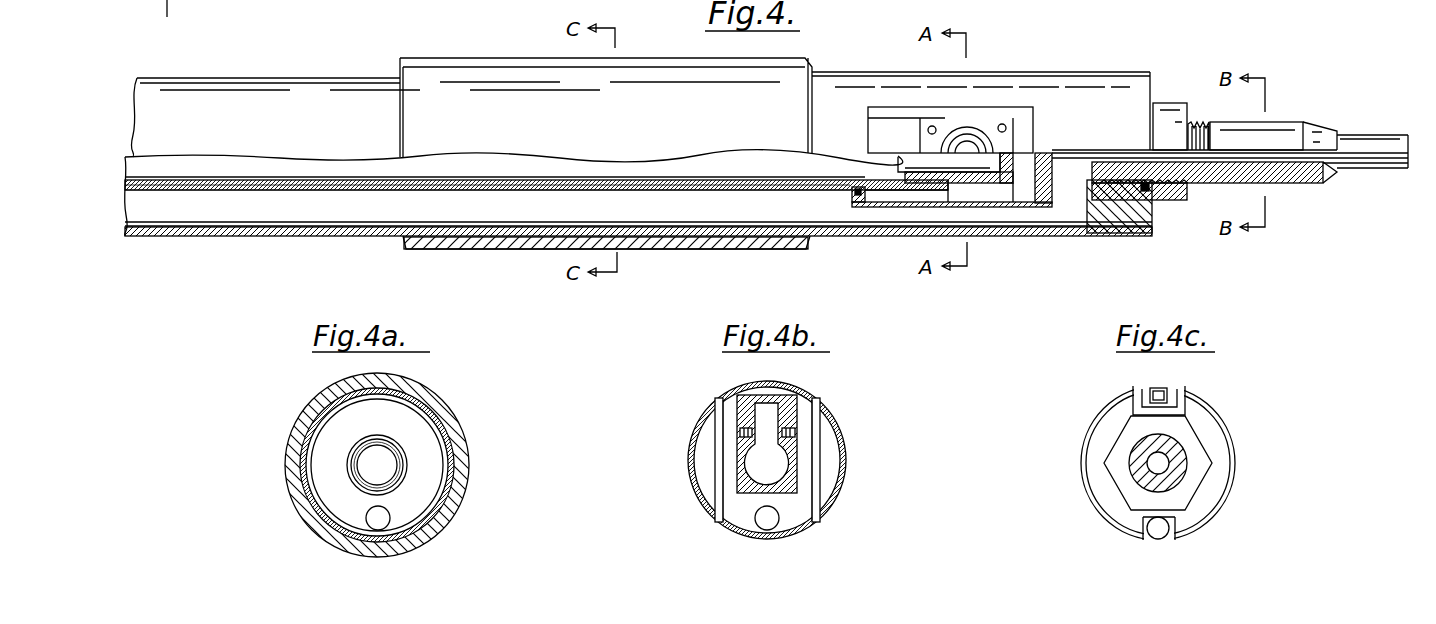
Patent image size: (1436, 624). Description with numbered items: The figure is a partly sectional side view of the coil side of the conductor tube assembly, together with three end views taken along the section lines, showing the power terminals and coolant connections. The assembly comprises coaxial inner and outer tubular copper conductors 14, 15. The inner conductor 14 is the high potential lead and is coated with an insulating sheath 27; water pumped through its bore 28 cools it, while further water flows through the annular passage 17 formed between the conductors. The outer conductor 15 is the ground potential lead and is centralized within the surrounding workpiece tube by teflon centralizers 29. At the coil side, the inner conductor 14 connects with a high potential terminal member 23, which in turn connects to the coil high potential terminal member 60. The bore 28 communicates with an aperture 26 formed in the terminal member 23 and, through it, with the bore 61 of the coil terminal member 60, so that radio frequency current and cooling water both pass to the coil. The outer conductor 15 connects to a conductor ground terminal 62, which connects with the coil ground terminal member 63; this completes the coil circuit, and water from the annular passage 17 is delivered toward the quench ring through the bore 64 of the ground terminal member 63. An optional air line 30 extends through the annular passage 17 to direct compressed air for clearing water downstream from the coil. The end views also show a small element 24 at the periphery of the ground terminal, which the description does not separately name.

In FIG. 4, the inner conductor 14 is at (312, 190).
In FIG. 4a, the inner conductor 14 is at (407, 466).
In FIG. 4, the outer conductor 15 is at (253, 233).
In FIG. 4a, the outer conductor 15 is at (470, 466).
In FIG. 4b, the outer conductor 15 is at (767, 460).
In FIG. 4c, the outer conductor 15 is at (1158, 463).
In FIG. 4, the annular passage 17 is at (180, 213).
In FIG. 4a, the annular passage 17 is at (320, 482).
In FIG. 4, the high potential terminal member 23 is at (1010, 130).
In FIG. 4b, the high potential terminal member 23 is at (745, 495).
In FIG. 4c, the key 24 is at (1160, 392).
In FIG. 4, the aperture 26 is at (962, 143).
In FIG. 4, the insulating sheath 27 is at (362, 188).
In FIG. 4, the bore 28 is at (238, 170).
In FIG. 4a, the bore 28 is at (365, 460).
In FIG. 4, the teflon centralizers 29 is at (690, 70).
In FIG. 4a, the teflon centralizers 29 is at (438, 393).
In FIG. 4a, the air line 30 is at (380, 518).
In FIG. 4b, the air line 30 is at (770, 518).
In FIG. 4c, the air line 30 is at (1165, 535).
In FIG. 4b, the coil high potential terminal member 60 is at (785, 396).
In FIG. 4b, the bore 61 is at (758, 420).
In FIG. 4, the conductor ground terminal 62 is at (1110, 215).
In FIG. 4c, the conductor ground terminal 62 is at (1158, 463).
In FIG. 4, the coil ground terminal member 63 is at (1268, 138).
In FIG. 4, the bore 64 is at (1283, 158).
In FIG. 4c, the bore 64 is at (1158, 463).